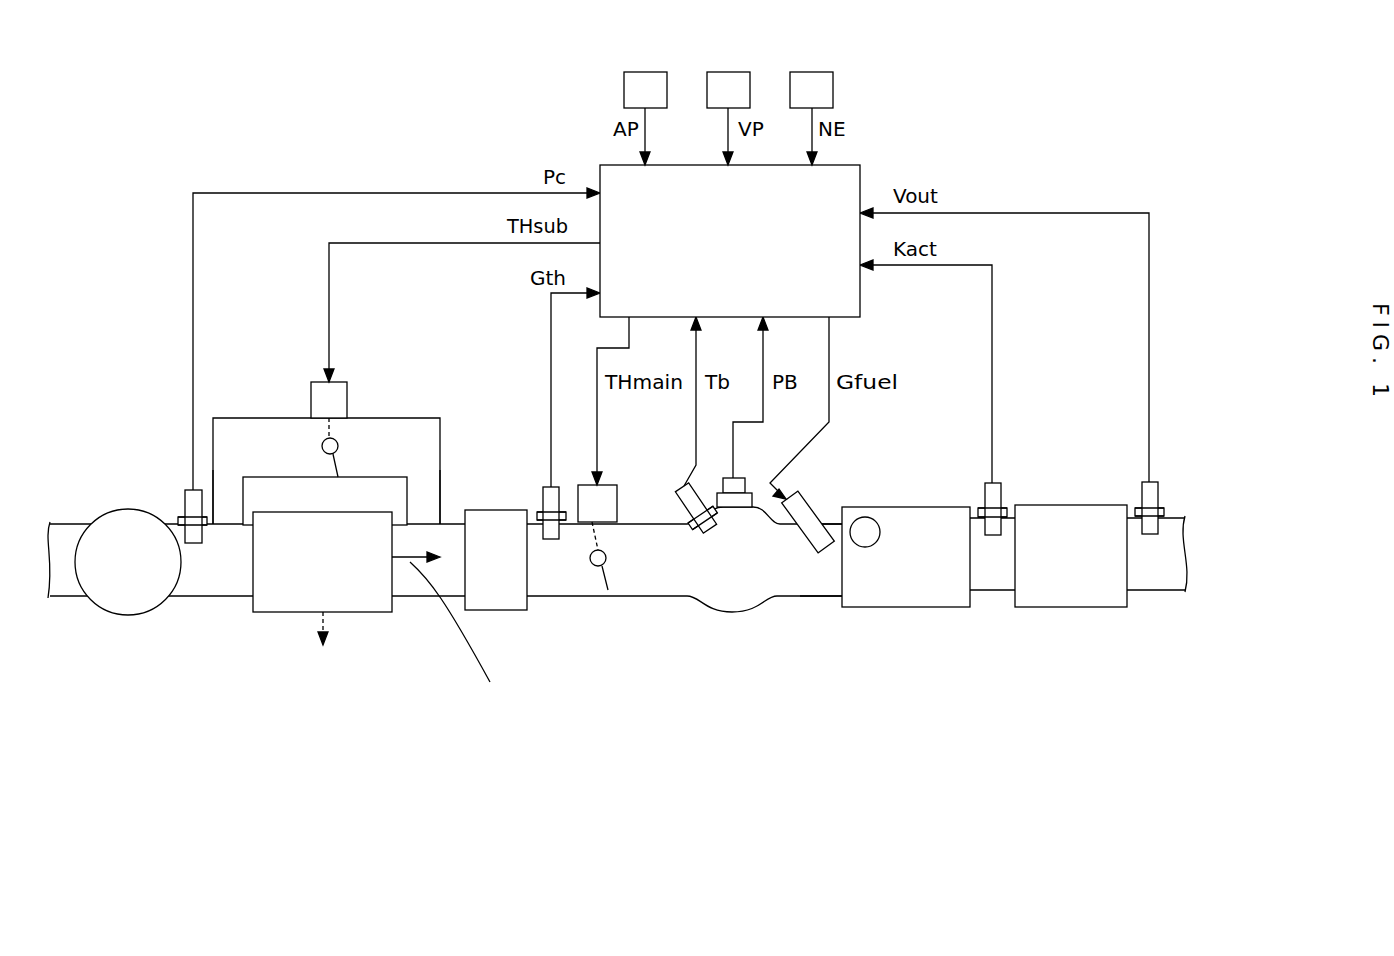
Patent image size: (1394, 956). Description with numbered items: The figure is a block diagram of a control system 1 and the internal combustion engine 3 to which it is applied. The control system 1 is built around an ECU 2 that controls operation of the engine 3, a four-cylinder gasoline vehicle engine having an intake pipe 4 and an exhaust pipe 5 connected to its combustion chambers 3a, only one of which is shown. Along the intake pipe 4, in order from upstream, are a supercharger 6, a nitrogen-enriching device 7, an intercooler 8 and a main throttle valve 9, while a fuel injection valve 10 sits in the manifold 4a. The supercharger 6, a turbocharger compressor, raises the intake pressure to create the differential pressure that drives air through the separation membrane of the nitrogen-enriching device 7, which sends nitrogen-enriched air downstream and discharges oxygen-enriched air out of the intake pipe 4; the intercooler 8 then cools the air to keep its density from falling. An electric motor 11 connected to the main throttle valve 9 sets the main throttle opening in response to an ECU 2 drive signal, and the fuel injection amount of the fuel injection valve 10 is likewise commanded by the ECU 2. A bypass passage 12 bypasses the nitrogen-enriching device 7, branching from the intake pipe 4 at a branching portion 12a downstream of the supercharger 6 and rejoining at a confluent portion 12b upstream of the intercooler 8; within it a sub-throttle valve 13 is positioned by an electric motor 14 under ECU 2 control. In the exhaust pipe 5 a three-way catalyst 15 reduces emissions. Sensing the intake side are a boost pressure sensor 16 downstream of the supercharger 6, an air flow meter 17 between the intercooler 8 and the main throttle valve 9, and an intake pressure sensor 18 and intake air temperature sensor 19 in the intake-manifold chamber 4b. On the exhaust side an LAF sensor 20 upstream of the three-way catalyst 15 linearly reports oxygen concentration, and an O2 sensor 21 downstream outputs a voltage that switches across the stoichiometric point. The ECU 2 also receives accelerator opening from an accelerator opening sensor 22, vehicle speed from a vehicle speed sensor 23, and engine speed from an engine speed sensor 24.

The control system 1 is at (580, 144).
The ECU 2 is at (845, 318).
The internal combustion engine 3 is at (905, 608).
The combustion chamber 3a is at (878, 518).
The intake pipe 4 is at (790, 602).
The manifold 4a is at (820, 598).
The intake-manifold chamber 4b is at (724, 612).
The exhaust pipe 5 is at (983, 592).
The supercharger 6 is at (123, 510).
The nitrogen-enriching device 7 is at (258, 613).
The intercooler 8 is at (487, 508).
The main throttle valve 9 is at (606, 595).
The fuel injection valve 10 is at (810, 502).
The electric motor 11 is at (593, 485).
The bypass passage 12 is at (407, 418).
The branching portion 12a is at (225, 520).
The confluent portion 12b is at (425, 505).
The sub-throttle valve 13 is at (318, 428).
The electric motor 14 is at (347, 392).
The three-way catalyst 15 is at (1057, 504).
The boost pressure sensor 16 is at (185, 503).
The air flow meter 17 is at (543, 500).
The intake pressure sensor 18 is at (740, 480).
The intake air temperature sensor 19 is at (680, 500).
The LAF sensor 20 is at (1002, 490).
The O2 sensor 21 is at (1160, 490).
The accelerator opening sensor 22 is at (648, 72).
The vehicle speed sensor 23 is at (732, 72).
The engine speed sensor 24 is at (815, 72).